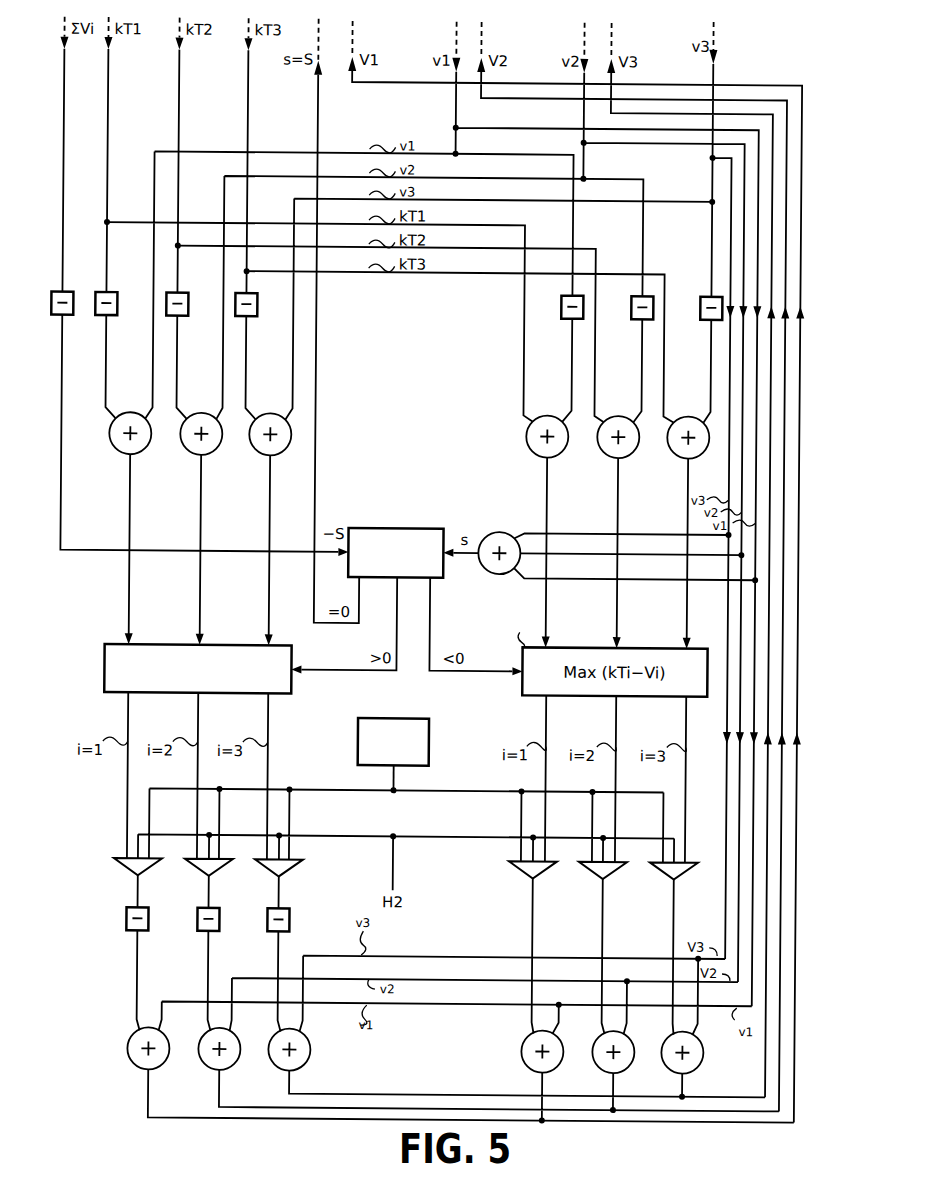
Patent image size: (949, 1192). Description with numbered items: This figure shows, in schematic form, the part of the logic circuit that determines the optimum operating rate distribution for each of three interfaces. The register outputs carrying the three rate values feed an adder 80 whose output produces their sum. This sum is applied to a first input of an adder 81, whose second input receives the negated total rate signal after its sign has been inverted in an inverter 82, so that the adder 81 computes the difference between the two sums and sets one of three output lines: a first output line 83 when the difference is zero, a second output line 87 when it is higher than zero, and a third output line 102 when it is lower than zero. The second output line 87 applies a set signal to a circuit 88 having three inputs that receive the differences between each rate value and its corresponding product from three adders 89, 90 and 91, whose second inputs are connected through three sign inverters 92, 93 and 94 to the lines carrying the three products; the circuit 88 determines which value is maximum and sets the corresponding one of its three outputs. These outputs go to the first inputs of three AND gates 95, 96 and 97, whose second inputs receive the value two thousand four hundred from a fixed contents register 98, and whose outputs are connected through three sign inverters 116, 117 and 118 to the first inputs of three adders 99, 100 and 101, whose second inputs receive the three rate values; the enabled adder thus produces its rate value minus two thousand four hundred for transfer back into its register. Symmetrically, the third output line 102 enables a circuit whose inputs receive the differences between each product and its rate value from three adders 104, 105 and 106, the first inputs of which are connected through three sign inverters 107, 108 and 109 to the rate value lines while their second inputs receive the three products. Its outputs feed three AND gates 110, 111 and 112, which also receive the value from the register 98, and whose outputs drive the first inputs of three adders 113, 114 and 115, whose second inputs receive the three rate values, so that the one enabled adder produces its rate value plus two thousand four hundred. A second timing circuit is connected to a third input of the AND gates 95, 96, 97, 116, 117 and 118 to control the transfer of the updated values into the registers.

The adder 80 is at (500, 530).
The adder 81 is at (398, 528).
The inverter 82 is at (66, 319).
The first output line 83 is at (318, 465).
The second output line 87 is at (352, 674).
The circuit 88 is at (108, 645).
The adder 89 is at (137, 455).
The adder 90 is at (208, 455).
The adder 91 is at (277, 455).
The sign inverter 92 is at (110, 319).
The sign inverter 93 is at (181, 319).
The sign inverter 94 is at (250, 319).
The AND gate 95 is at (152, 870).
The AND gate 96 is at (223, 870).
The AND gate 97 is at (293, 870).
The fixed contents register 98 is at (430, 746).
The adder 99 is at (140, 1068).
The adder 100 is at (211, 1068).
The adder 101 is at (281, 1068).
The third output line 102 is at (446, 674).
The adder 104 is at (554, 455).
The adder 105 is at (625, 455).
The adder 106 is at (695, 455).
The sign inverter 107 is at (563, 319).
The sign inverter 108 is at (633, 319).
The sign inverter 109 is at (702, 319).
The AND gate 110 is at (547, 870).
The AND gate 111 is at (617, 870).
The AND gate 112 is at (688, 870).
The adder 113 is at (534, 1068).
The adder 114 is at (605, 1068).
The adder 115 is at (674, 1068).
The sign inverter 116 is at (130, 930).
The sign inverter 117 is at (201, 930).
The sign inverter 118 is at (271, 930).